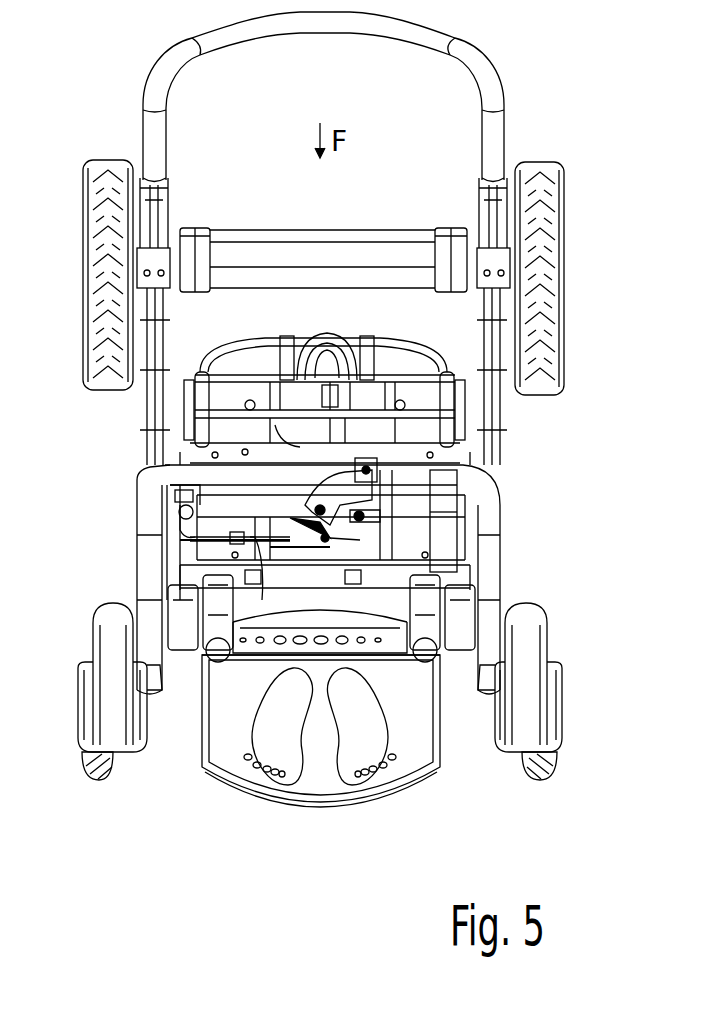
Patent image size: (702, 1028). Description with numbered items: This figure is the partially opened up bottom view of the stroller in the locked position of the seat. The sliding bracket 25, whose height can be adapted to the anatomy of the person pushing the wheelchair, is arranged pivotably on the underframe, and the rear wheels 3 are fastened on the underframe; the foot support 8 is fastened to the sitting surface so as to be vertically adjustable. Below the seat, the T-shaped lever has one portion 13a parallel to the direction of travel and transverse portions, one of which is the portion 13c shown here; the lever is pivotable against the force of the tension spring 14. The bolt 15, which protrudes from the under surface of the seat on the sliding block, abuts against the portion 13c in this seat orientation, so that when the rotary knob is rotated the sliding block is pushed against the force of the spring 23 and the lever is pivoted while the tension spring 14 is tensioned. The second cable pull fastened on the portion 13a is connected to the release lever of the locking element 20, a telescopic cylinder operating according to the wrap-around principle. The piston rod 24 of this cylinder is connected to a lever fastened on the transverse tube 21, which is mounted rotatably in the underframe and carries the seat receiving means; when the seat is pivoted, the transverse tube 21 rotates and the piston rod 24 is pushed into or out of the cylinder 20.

The sliding bracket 25 is at (477, 66).
The rear wheel 3 is at (547, 318).
The spring 23 is at (420, 466).
The portion of the lever 13c is at (380, 500).
The bolt 15 is at (362, 516).
The portion of the lever 13a is at (330, 530).
The tension spring 14 is at (305, 545).
The locking element 20 is at (183, 493).
The piston rod 24 is at (188, 515).
The transverse tube 21 is at (213, 540).
The foot support 8 is at (253, 775).